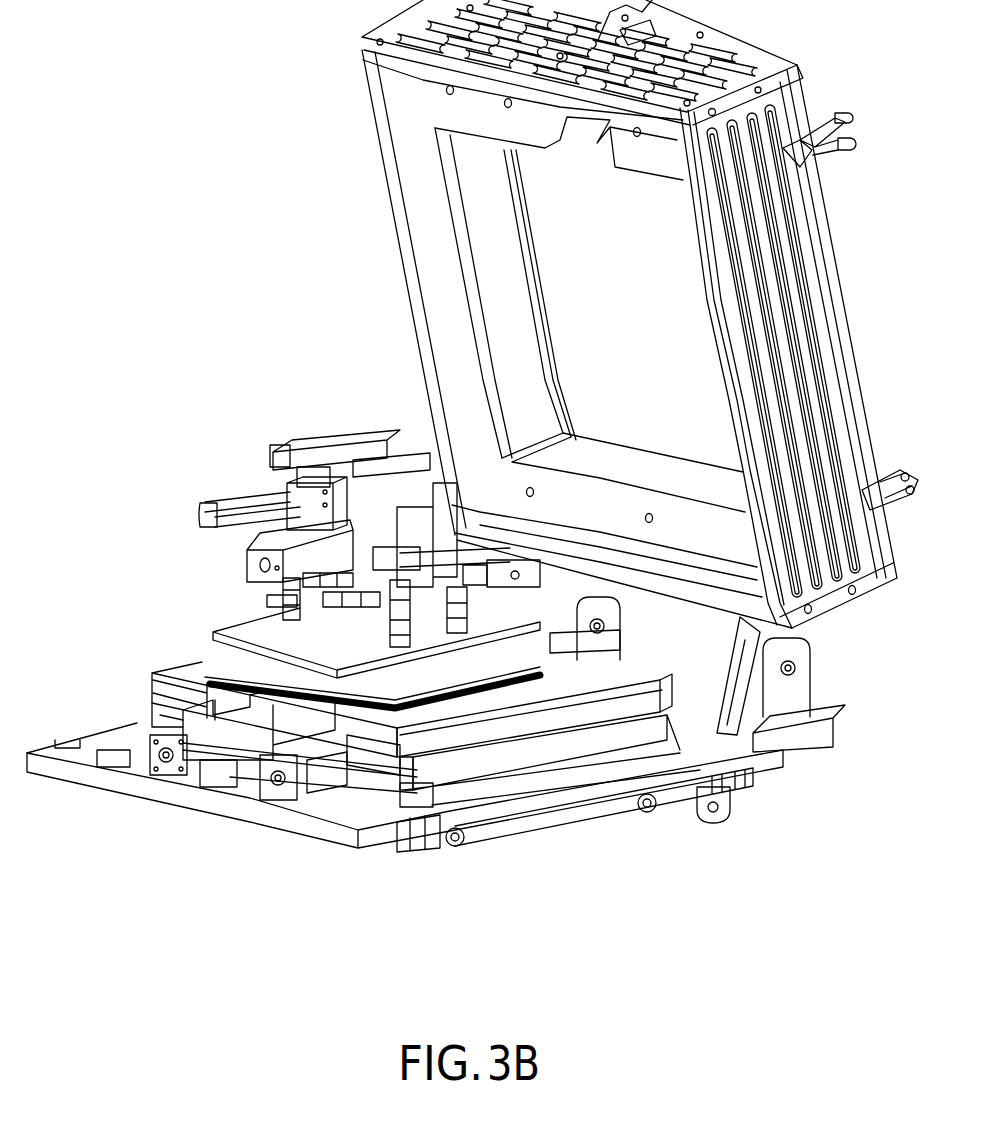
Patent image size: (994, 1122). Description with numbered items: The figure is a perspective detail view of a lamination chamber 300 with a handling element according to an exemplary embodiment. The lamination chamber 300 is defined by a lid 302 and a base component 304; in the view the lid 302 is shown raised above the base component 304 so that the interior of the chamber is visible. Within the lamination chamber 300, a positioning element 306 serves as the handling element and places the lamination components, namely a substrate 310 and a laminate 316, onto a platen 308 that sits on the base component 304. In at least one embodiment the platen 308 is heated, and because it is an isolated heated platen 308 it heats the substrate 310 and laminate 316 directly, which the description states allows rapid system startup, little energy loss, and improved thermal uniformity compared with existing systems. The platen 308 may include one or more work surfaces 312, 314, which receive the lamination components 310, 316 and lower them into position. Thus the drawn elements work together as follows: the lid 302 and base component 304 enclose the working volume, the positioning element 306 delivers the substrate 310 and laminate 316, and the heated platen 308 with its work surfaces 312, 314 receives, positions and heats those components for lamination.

The lamination chamber 300 is at (190, 288).
The lid 302 is at (393, 68).
The base component 304 is at (763, 763).
The positioning element 306 is at (300, 543).
The platen 308 is at (532, 720).
The substrate 310 is at (265, 687).
The work surface 312 is at (598, 662).
The work surface 314 is at (422, 733).
The laminate 316 is at (290, 642).